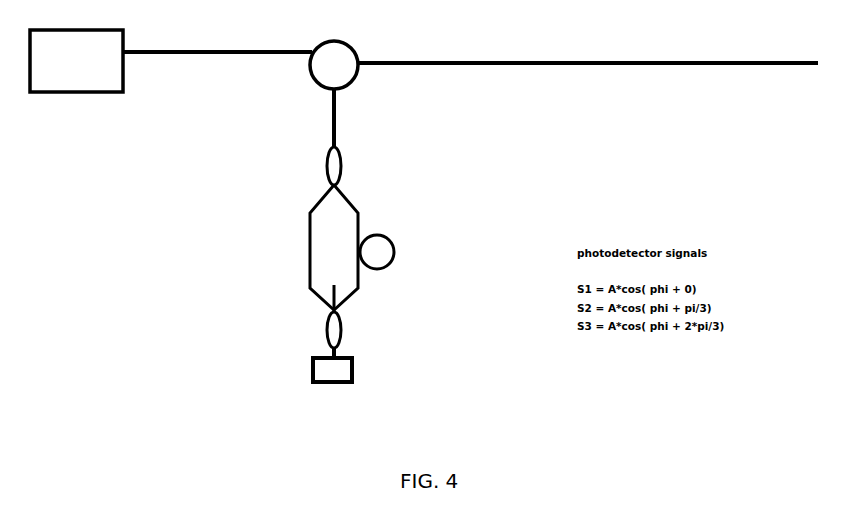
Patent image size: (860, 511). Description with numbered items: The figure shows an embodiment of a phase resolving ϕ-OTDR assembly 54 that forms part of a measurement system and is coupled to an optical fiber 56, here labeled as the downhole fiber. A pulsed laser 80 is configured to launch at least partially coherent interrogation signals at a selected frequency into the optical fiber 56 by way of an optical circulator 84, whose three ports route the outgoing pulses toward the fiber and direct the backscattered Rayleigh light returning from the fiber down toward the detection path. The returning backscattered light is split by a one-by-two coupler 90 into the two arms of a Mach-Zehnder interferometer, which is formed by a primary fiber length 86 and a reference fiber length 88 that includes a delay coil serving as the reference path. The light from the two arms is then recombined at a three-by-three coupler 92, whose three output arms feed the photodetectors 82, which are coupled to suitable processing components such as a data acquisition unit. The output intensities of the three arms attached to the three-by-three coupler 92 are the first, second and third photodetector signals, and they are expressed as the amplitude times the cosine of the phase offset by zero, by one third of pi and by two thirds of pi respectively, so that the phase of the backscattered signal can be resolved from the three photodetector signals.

The ϕ-OTDR assembly 54 is at (159, 201).
The optical fiber 56 is at (672, 62).
The laser 80 is at (126, 73).
The photodetectors 82 is at (355, 376).
The optical circulator 84 is at (309, 69).
The primary fiber length 86 is at (309, 244).
The reference fiber length 88 is at (387, 238).
The 1×2 coupler 90 is at (324, 162).
The 3×3 coupler 92 is at (325, 325).